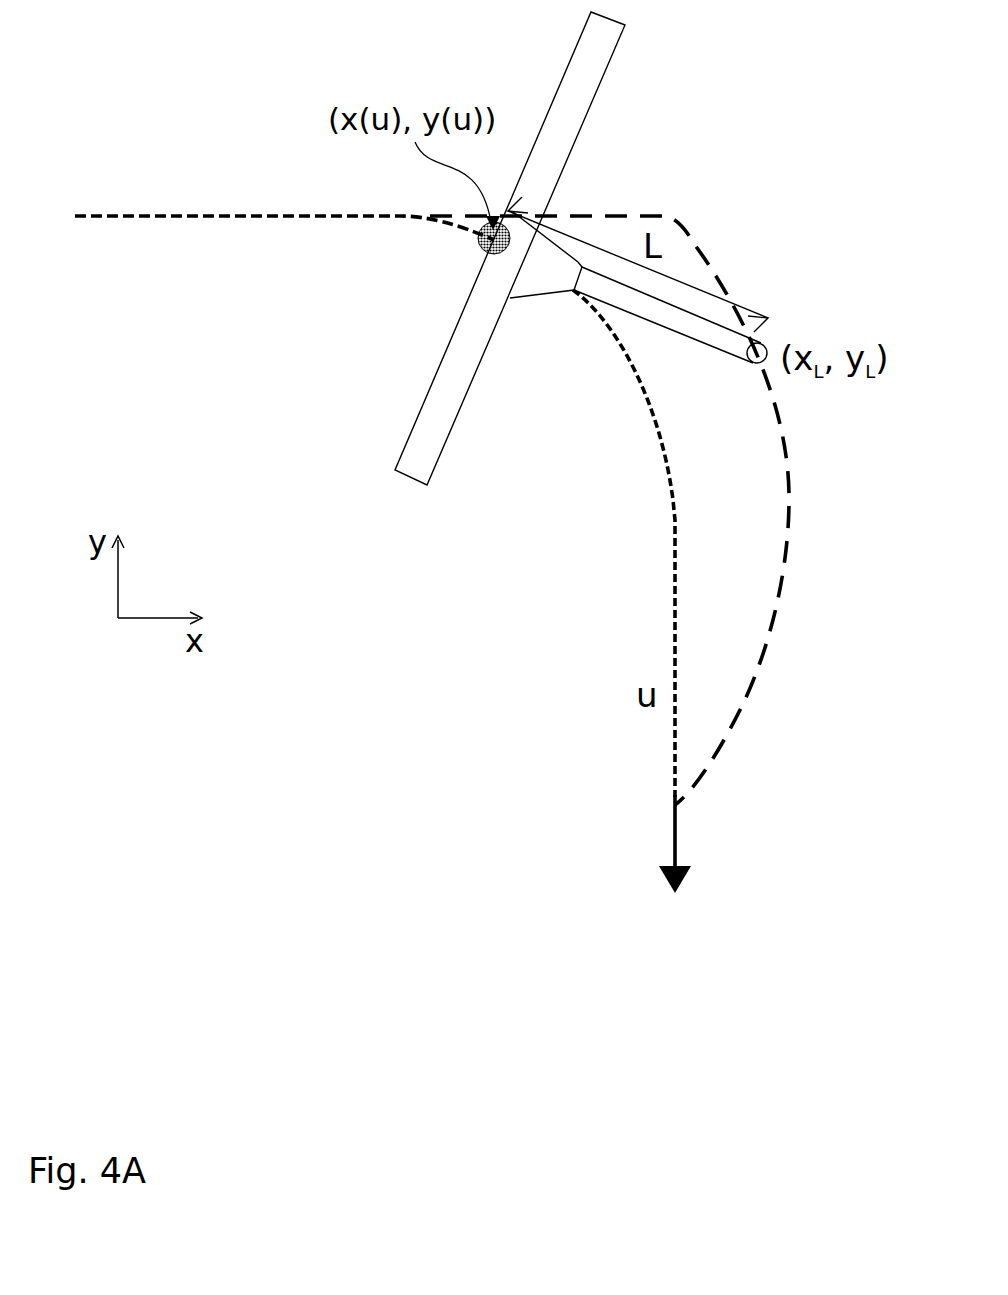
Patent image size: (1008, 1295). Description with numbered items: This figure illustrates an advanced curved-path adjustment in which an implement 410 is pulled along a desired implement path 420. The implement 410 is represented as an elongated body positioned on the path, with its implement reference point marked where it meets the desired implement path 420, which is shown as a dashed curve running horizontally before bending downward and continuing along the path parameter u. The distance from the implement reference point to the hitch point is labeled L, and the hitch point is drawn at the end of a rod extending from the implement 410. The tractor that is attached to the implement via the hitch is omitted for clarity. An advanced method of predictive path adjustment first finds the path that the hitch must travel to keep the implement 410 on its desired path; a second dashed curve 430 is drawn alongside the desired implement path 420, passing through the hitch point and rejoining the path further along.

The implement 410 is at (593, 75).
The desired implement path 420 is at (670, 602).
The offset trajectory of stylus rear end 430 is at (765, 663).